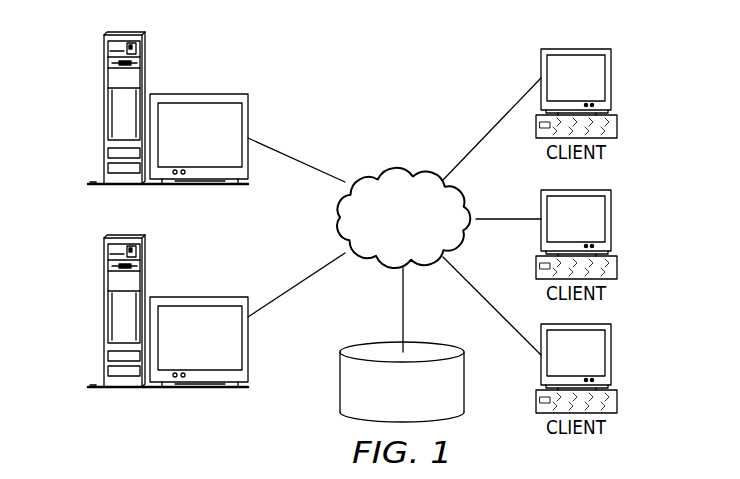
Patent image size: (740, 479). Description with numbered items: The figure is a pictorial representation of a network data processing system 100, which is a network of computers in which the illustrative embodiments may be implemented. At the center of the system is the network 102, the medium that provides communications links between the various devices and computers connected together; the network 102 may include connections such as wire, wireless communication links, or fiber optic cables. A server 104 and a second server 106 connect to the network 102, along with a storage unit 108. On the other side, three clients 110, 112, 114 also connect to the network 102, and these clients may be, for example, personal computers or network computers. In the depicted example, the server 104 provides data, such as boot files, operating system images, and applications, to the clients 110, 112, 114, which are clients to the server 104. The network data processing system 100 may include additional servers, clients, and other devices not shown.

The network data processing system 100 is at (453, 69).
The network 102 is at (372, 170).
The server 104 is at (104, 110).
The server 106 is at (104, 313).
The storage unit 108 is at (340, 393).
The client 110 is at (612, 80).
The client 112 is at (612, 218).
The client 114 is at (612, 355).